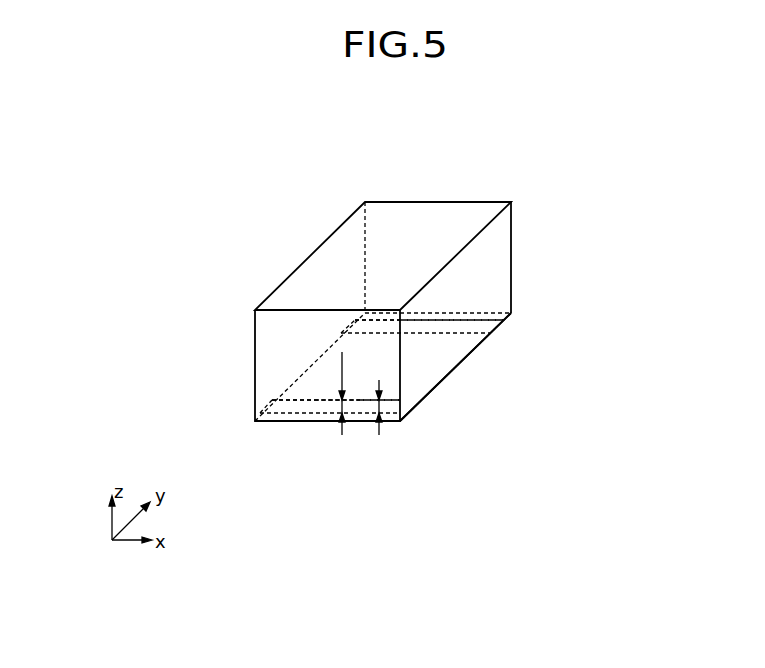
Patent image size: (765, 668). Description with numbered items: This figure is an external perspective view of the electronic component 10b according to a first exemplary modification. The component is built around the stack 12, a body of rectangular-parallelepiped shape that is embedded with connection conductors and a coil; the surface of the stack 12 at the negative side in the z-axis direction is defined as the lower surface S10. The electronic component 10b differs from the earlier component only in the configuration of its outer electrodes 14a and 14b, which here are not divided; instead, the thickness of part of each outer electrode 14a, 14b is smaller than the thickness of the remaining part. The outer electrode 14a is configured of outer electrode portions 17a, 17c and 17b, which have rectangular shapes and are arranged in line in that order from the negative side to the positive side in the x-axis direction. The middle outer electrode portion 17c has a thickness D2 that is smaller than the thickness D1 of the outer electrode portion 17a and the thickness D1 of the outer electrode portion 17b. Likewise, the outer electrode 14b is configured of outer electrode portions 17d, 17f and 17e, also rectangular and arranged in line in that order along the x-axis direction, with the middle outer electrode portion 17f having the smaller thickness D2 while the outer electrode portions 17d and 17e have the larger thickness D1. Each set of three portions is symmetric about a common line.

The electronic component 10b is at (252, 150).
The stack 12 is at (516, 218).
The outer electrode 14a is at (484, 381).
The outer electrode 14b is at (328, 477).
The outer electrode portion 17a is at (373, 333).
The outer electrode portion 17b is at (490, 331).
The outer electrode portion 17c is at (428, 327).
The outer electrode portion 17d is at (287, 414).
The outer electrode portion 17e is at (378, 454).
The outer electrode portion 17f is at (354, 414).
The lower surface S10 is at (433, 367).
The thickness D1 is at (394, 418).
The thickness D2 is at (325, 404).